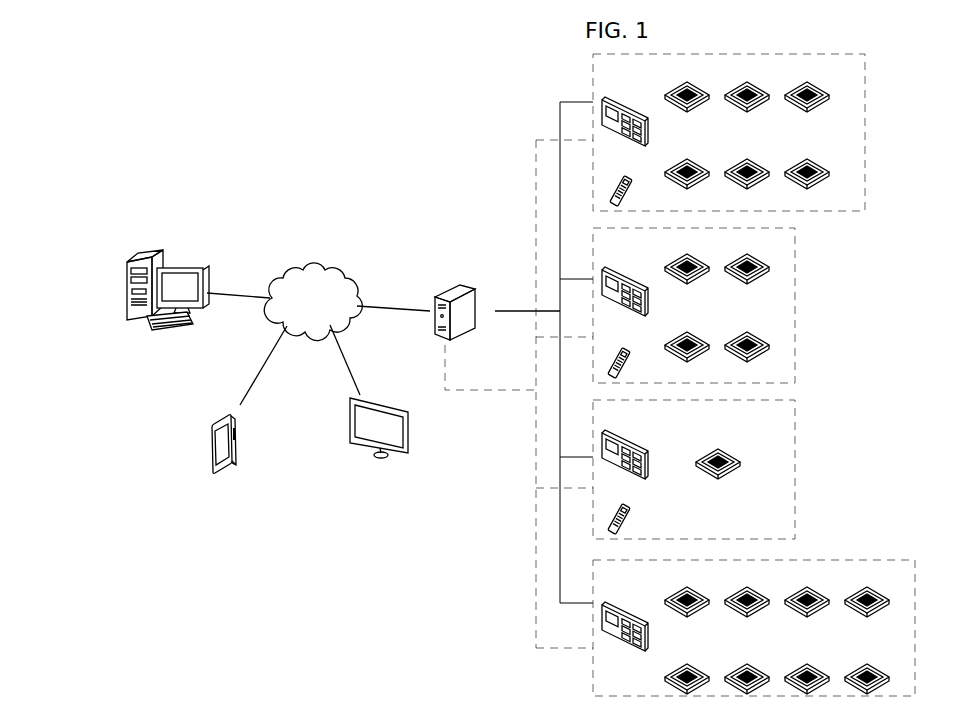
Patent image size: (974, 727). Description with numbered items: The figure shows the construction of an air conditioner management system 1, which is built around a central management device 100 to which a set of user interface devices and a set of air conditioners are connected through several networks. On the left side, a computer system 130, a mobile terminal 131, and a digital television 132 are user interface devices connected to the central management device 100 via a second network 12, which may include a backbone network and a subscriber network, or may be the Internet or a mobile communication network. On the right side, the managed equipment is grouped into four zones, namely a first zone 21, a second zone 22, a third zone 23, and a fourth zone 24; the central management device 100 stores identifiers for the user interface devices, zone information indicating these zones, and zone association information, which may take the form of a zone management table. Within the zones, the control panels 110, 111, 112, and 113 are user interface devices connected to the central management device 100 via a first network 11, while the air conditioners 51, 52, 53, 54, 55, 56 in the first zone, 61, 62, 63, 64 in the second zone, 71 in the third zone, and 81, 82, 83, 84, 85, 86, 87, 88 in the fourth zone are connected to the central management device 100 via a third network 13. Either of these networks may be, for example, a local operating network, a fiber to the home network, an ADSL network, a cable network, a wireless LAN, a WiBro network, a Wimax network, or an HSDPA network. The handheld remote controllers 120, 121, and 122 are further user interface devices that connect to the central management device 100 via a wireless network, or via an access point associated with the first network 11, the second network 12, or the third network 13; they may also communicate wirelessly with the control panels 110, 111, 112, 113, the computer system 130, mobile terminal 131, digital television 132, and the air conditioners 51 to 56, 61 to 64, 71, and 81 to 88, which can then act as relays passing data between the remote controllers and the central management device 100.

The air conditioner management system 1 is at (378, 176).
The first network 11 is at (535, 184).
The second network 12 is at (321, 272).
The third network 13 is at (560, 96).
The zone 1 21 is at (868, 116).
The zone 2 22 is at (798, 284).
The zone 3 23 is at (798, 451).
The zone 4 24 is at (918, 609).
The air conditioner 51 is at (695, 86).
The air conditioner 52 is at (755, 86).
The air conditioner 53 is at (815, 86).
The air conditioner 54 is at (695, 163).
The air conditioner 55 is at (755, 163).
The air conditioner 56 is at (815, 163).
The air conditioner 61 is at (695, 258).
The air conditioner 62 is at (755, 258).
The air conditioner 63 is at (695, 336).
The air conditioner 64 is at (755, 336).
The air conditioner 71 is at (726, 453).
The air conditioner 81 is at (695, 591).
The air conditioner 82 is at (755, 591).
The air conditioner 83 is at (815, 591).
The air conditioner 84 is at (875, 591).
The air conditioner 85 is at (695, 669).
The air conditioner 86 is at (755, 669).
The air conditioner 87 is at (815, 669).
The air conditioner 88 is at (875, 669).
The central management device 100 is at (452, 290).
The user interface device (control panel) 110 is at (651, 128).
The user interface device (control panel) 111 is at (651, 298).
The user interface device (control panel) 112 is at (651, 461).
The user interface device (control panel) 113 is at (651, 633).
The user interface device (handheld remote controller) 120 is at (628, 183).
The user interface device (handheld remote controller) 121 is at (627, 355).
The user interface device (handheld remote controller) 122 is at (627, 512).
The user interface device (computer system) 130 is at (180, 266).
The user interface device (mobile terminal) 131 is at (211, 450).
The user interface device (digital television) 132 is at (362, 446).